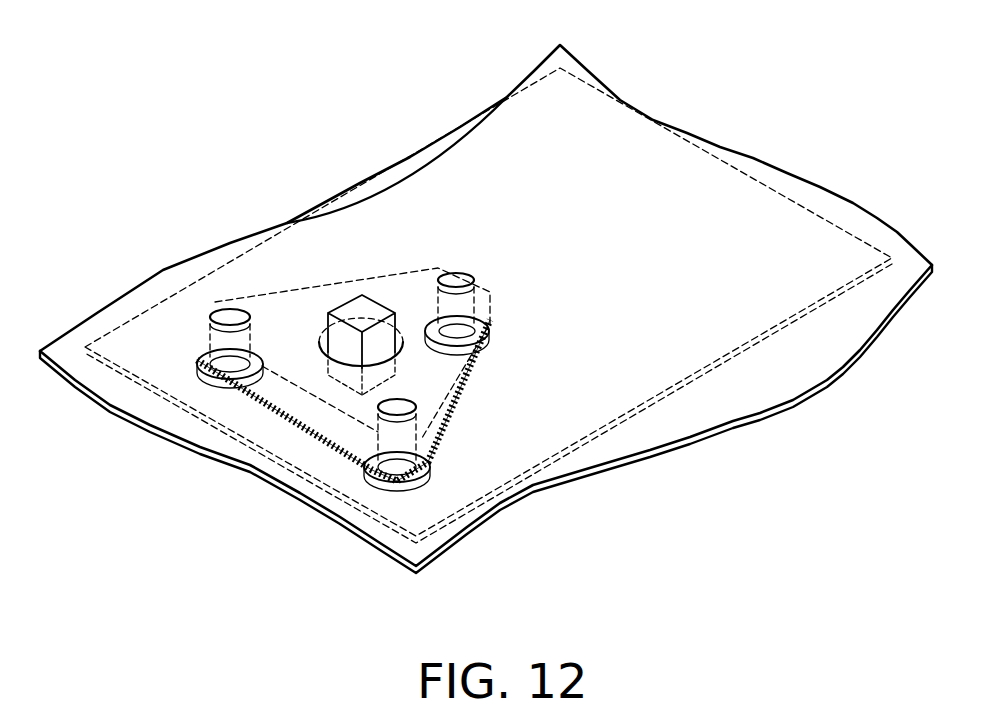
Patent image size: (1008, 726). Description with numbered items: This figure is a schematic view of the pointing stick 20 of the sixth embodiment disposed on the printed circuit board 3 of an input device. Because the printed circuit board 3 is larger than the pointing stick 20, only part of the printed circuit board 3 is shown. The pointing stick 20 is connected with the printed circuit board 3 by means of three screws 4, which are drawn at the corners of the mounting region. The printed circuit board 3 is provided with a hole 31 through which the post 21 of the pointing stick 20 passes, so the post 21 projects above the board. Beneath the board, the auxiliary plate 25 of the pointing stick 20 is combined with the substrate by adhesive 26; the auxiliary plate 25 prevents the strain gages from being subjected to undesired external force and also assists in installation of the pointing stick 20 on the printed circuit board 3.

The printed circuit board 3 is at (827, 200).
The pointing stick 20 is at (135, 188).
The screws 4 is at (442, 317).
The post 21 is at (364, 295).
The hole 31 is at (323, 318).
The auxiliary plate 25 is at (498, 374).
The adhesive 26 is at (430, 422).